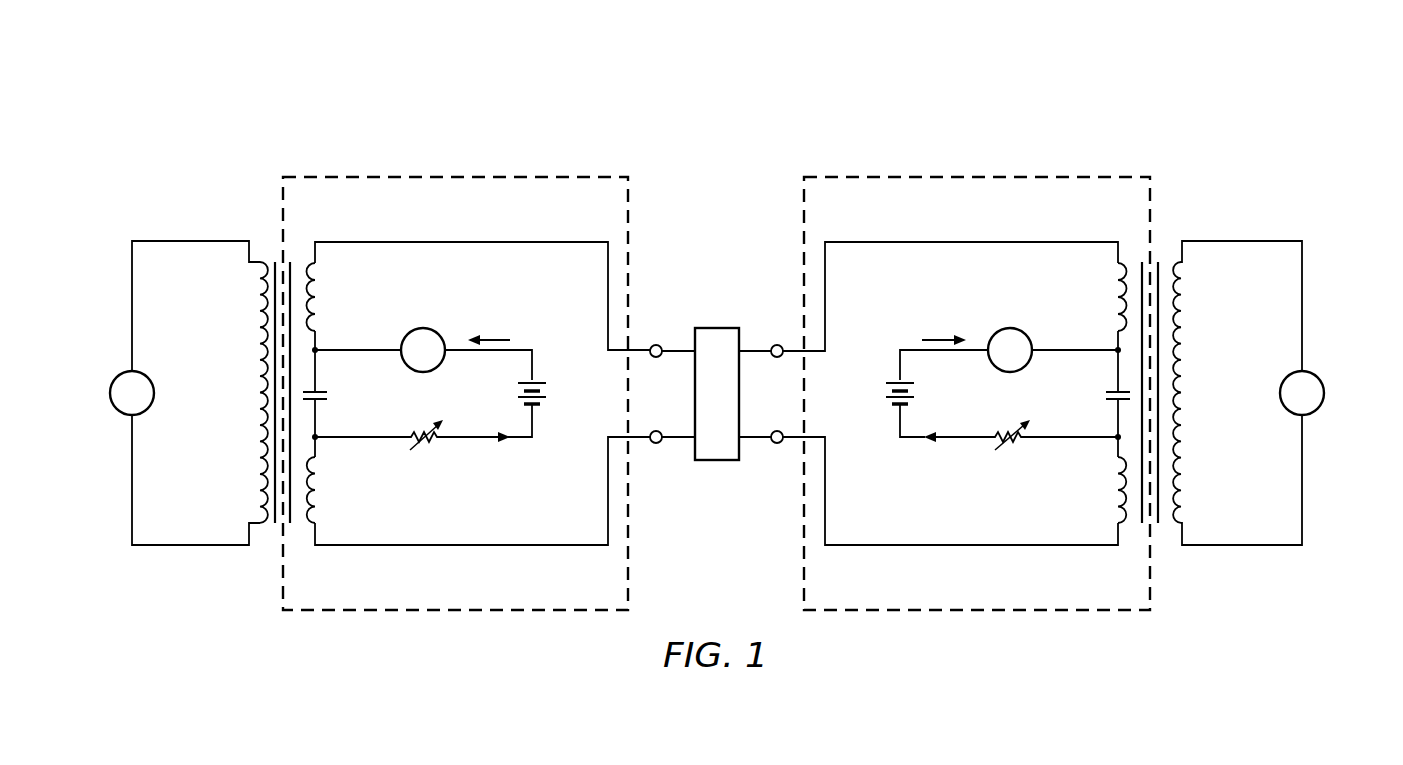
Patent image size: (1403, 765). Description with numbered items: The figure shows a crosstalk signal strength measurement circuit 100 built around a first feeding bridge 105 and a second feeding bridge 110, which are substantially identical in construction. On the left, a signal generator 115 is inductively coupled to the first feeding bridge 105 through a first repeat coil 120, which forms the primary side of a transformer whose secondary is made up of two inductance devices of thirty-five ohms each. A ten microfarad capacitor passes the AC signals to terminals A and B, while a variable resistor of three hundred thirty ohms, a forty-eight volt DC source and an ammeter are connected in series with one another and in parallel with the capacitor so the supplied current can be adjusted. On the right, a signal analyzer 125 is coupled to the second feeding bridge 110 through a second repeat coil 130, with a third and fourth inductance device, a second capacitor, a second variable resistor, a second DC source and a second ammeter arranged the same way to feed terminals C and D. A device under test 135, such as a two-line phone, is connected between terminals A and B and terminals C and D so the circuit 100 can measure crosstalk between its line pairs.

The crosstalk signal strength measurement circuit 100 is at (527, 97).
The first feeding bridge 105 is at (443, 620).
The second feeding bridge 110 is at (991, 620).
The signal generator 115 is at (110, 398).
The first repeat coil 120 is at (258, 306).
The signal analyzer 125 is at (1326, 398).
The second repeat coil 130 is at (1176, 303).
The device under test 135 is at (717, 327).